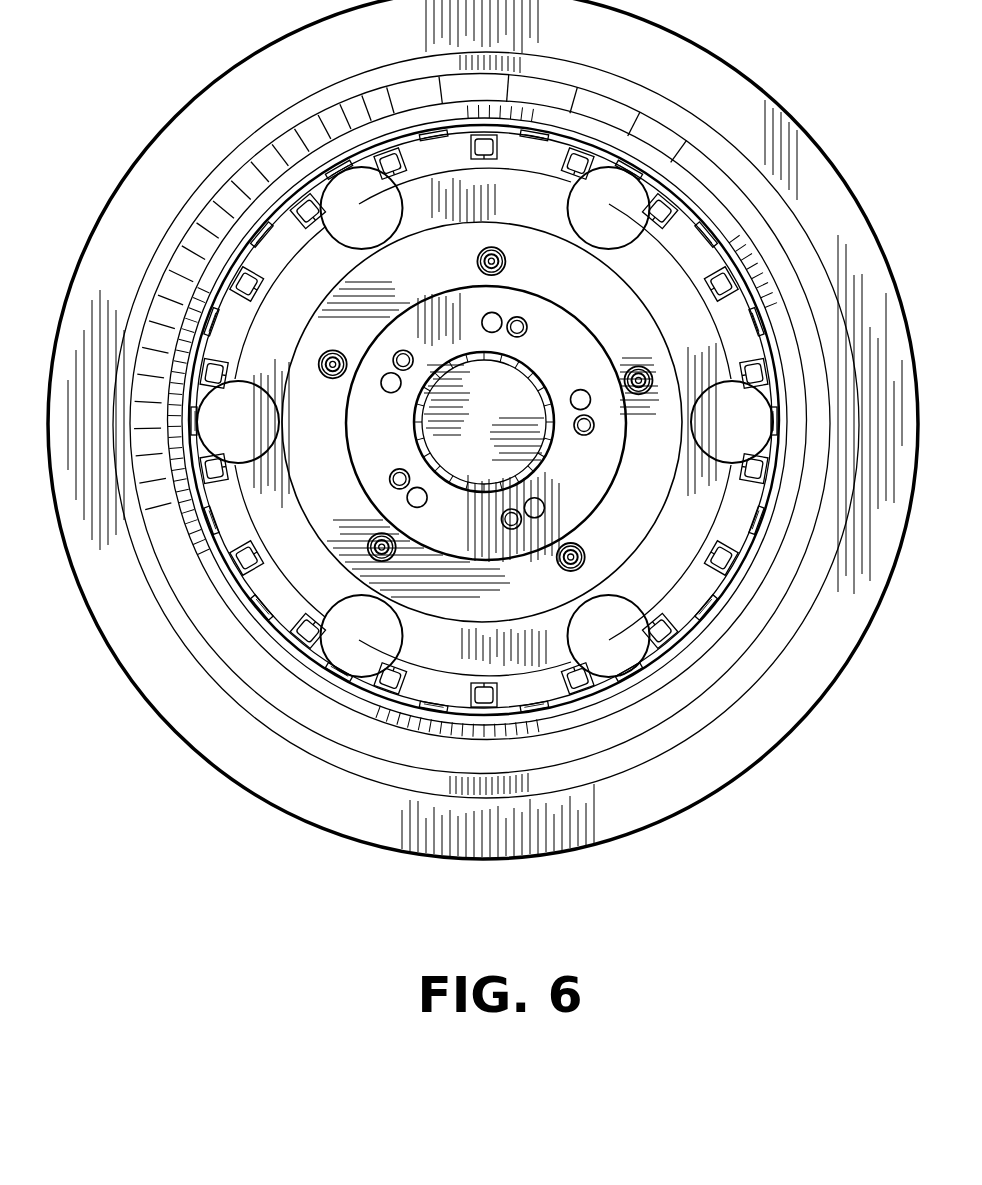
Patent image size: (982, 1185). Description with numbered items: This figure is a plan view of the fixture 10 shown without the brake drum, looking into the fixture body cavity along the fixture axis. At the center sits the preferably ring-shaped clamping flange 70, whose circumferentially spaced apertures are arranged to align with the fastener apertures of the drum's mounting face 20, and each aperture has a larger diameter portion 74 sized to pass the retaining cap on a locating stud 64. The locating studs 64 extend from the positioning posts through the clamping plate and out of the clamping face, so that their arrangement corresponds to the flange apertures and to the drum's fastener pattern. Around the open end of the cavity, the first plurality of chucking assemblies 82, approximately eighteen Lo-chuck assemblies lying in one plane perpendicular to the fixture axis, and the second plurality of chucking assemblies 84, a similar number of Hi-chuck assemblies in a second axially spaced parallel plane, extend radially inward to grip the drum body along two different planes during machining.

The fixture 10 is at (182, 771).
The mounting face 20 is at (664, 548).
The locating stud 64 is at (527, 325).
The clamping flange 70 is at (473, 560).
The larger diameter portion 74 is at (487, 312).
The first plurality of chucking assemblies 82 is at (401, 152).
The second plurality of chucking assemblies 84 is at (548, 148).